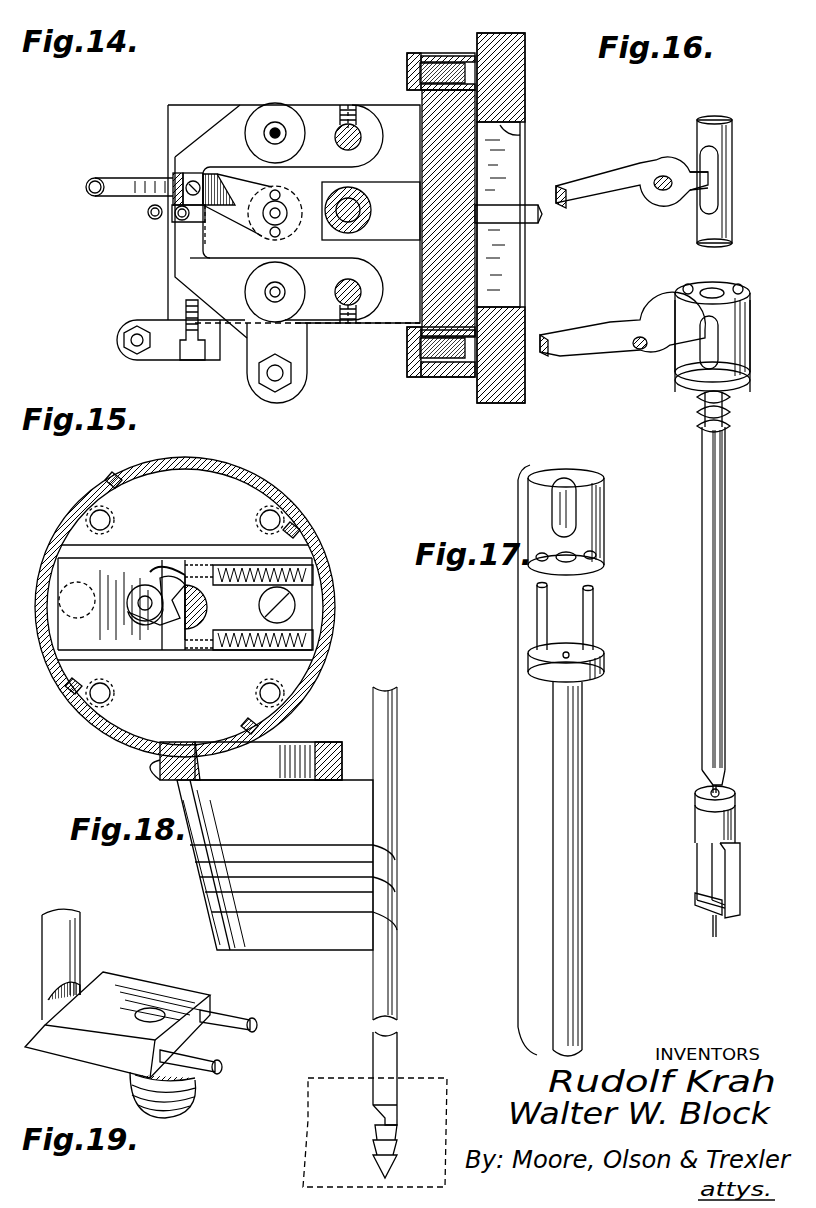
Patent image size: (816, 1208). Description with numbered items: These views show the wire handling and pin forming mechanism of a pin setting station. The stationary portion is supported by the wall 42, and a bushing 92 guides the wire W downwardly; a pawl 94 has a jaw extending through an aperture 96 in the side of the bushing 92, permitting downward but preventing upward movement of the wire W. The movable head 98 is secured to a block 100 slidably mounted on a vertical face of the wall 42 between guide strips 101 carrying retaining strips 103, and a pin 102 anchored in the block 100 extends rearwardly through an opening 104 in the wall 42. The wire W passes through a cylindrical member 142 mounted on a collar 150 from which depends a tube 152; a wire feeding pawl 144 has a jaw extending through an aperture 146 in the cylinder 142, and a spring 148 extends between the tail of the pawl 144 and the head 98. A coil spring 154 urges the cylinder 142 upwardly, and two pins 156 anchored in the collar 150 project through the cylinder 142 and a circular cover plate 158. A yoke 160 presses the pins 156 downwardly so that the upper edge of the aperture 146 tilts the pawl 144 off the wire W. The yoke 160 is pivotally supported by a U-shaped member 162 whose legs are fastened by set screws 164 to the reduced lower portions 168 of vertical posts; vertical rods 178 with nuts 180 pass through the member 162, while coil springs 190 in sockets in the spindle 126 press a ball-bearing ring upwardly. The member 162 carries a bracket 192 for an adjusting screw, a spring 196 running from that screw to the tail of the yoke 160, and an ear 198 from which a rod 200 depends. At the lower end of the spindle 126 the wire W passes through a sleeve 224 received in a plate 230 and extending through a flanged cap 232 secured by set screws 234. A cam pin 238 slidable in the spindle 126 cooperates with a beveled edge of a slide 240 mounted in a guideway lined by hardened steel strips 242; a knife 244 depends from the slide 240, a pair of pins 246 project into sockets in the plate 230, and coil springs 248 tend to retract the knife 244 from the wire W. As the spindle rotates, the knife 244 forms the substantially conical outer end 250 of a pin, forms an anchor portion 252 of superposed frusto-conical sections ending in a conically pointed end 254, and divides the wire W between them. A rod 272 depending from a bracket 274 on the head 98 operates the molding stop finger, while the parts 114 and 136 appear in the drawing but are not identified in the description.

In FIG. 14, the wall 42 is at (515, 82).
In FIG. 16, the bushing 92 is at (727, 130).
In FIG. 16, the pawl 94 is at (690, 195).
In FIG. 14, the aperture 96 is at (148, 210).
In FIG. 16, the aperture 96 is at (712, 170).
In FIG. 14, the head 98 is at (168, 245).
In FIG. 14, the block 100 is at (465, 272).
In FIG. 14, the guide strips 101 is at (448, 56).
In FIG. 14, the pin 102 is at (540, 218).
In FIG. 14, the retaining strips 103 is at (400, 107).
In FIG. 14, the opening 104 is at (515, 130).
In FIG. 14, the shaft 114 is at (372, 200).
In FIG. 15, the spindle 126 is at (170, 470).
In FIG. 15, the housing wall 136 is at (70, 668).
In FIG. 16, the cylindrical member 142 is at (752, 338).
In FIG. 17, the cylindrical member 142 is at (598, 528).
In FIG. 16, the wire feeding pawl 144 is at (645, 355).
In FIG. 16, the aperture 146 is at (720, 335).
In FIG. 17, the aperture 146 is at (575, 500).
In FIG. 14, the spring 148 is at (175, 216).
In FIG. 16, the collar 150 is at (725, 390).
In FIG. 17, the collar 150 is at (595, 675).
In FIG. 16, the tube 152 is at (705, 595).
In FIG. 17, the tube 152 is at (582, 810).
In FIG. 16, the coil spring 154 is at (697, 418).
In FIG. 14, the pins 156 is at (265, 236).
In FIG. 16, the pins 156 is at (684, 288).
In FIG. 17, the pins 156 is at (537, 613).
In FIG. 16, the cover plate 158 is at (733, 280).
In FIG. 17, the cover plate 158 is at (600, 478).
In FIG. 14, the yoke 160 is at (215, 185).
In FIG. 14, the U-shaped member 162 is at (312, 105).
In FIG. 14, the set screws 164 is at (344, 105).
In FIG. 14, the reduced lower portions 168 is at (350, 128).
In FIG. 14, the vertical rods 178 is at (278, 123).
In FIG. 14, the nuts 180 is at (262, 112).
In FIG. 15, the coil springs 190 is at (85, 512).
In FIG. 14, the bracket 192 is at (175, 176).
In FIG. 14, the spring 196 is at (96, 176).
In FIG. 14, the ear 198 is at (295, 392).
In FIG. 14, the rod 200 is at (268, 382).
In FIG. 15, the sleeve 224 is at (235, 607).
In FIG. 16, the sleeve 224 is at (730, 812).
In FIG. 15, the plate 230 is at (300, 605).
In FIG. 15, the flanged cap 232 is at (300, 505).
In FIG. 15, the set screws 234 is at (105, 478).
In FIG. 15, the cam pin 238 is at (70, 620).
In FIG. 19, the cam pin 238 is at (70, 933).
In FIG. 15, the slide 240 is at (118, 640).
In FIG. 18, the slide 240 is at (280, 768).
In FIG. 19, the slide 240 is at (110, 985).
In FIG. 15, the strips 242 is at (175, 545).
In FIG. 15, the knife 244 is at (130, 580).
In FIG. 18, the knife 244 is at (330, 935).
In FIG. 19, the knife 244 is at (170, 1115).
In FIG. 15, the pins 246 is at (200, 560).
In FIG. 19, the pins 246 is at (225, 1068).
In FIG. 15, the coil springs 248 is at (300, 570).
In FIG. 18, the outer end 250 is at (395, 928).
In FIG. 18, the anchor portion 252 is at (395, 868).
In FIG. 18, the conically pointed end 254 is at (395, 900).
In FIG. 14, the rod 272 is at (120, 336).
In FIG. 14, the bracket 274 is at (130, 345).
In FIG. 18, the wire W is at (397, 717).